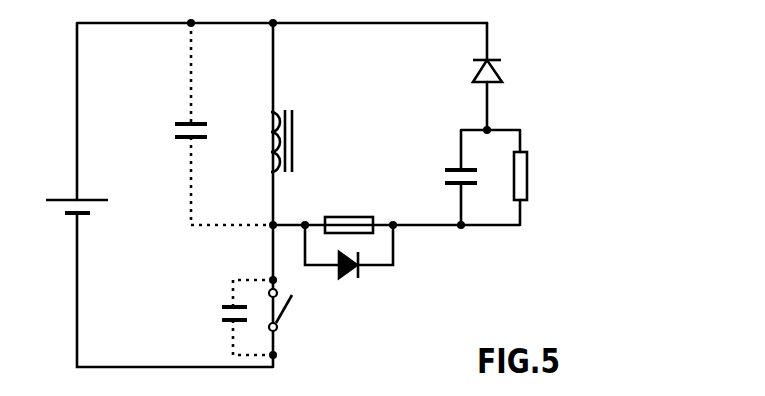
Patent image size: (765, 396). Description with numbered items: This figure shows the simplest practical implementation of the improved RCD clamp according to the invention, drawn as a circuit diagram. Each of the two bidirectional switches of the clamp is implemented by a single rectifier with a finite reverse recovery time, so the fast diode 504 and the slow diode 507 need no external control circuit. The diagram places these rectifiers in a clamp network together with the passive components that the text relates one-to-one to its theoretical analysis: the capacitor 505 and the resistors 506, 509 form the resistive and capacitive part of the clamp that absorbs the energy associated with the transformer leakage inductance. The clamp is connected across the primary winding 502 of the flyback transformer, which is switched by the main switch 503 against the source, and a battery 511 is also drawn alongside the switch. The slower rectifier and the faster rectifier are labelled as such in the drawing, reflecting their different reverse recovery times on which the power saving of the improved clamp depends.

The inductor (solenoid coil) 502 is at (268, 126).
The switch 503 is at (287, 302).
The fast diode 504 is at (357, 279).
The capacitor 505 is at (444, 177).
The resistor 506 is at (528, 172).
The slow diode 507 is at (503, 70).
The resistor 509 is at (373, 188).
The auxiliary battery 511 is at (222, 313).